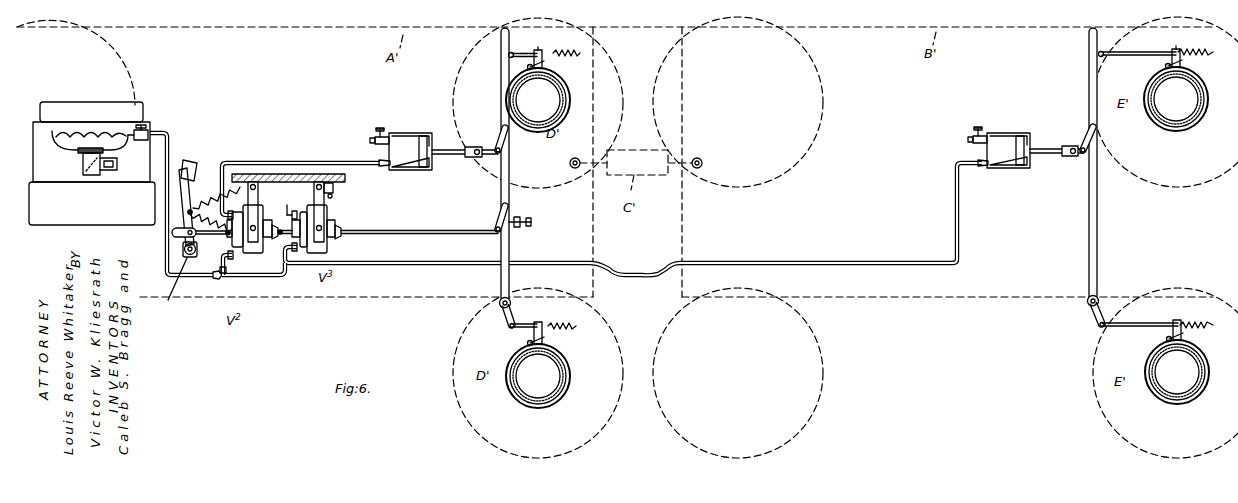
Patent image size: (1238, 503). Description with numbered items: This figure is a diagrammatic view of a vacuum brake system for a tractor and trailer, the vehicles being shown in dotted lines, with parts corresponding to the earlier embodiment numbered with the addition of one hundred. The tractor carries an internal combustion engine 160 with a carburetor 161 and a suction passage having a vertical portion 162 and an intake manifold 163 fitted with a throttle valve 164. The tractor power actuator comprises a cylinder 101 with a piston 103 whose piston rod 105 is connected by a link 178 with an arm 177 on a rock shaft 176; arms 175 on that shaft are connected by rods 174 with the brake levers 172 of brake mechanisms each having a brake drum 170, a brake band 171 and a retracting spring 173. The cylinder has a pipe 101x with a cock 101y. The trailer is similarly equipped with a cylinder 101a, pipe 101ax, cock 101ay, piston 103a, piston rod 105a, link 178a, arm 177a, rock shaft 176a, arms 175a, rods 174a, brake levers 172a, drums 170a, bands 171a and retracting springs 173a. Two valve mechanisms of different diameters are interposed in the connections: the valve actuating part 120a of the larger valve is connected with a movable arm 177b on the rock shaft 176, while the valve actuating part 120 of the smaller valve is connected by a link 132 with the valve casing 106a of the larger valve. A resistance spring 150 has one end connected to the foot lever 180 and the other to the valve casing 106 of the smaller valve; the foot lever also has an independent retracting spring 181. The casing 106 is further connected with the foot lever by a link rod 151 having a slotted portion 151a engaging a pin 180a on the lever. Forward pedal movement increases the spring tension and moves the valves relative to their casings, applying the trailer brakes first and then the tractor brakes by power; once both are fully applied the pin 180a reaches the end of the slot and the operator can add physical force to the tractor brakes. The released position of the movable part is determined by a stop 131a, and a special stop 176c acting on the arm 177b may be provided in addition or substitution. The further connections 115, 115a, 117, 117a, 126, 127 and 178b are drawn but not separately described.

The cylinder 101 is at (389, 135).
The pipe 101x is at (380, 128).
The cock 101y is at (372, 138).
The trailer cylinder 101a is at (995, 134).
The trailer pipe 101ax is at (979, 127).
The trailer cock 101ay is at (970, 137).
The piston 103 is at (421, 165).
The trailer piston 103a is at (1018, 165).
The piston rod 105 is at (444, 157).
The trailer piston rod 105a is at (1050, 156).
The valve casing 106 is at (250, 207).
The valve casing 106a is at (316, 207).
The front brake pipe 115 is at (344, 160).
The rear brake pipe 115a is at (866, 262).
The pipe fitting 117 is at (224, 278).
The connecting pipe 117a is at (285, 266).
The valve actuating part 120 is at (266, 258).
The valve actuating part 120a is at (384, 230).
The supply pipe 126 is at (215, 280).
The reservoir outlet fitting 127 is at (144, 129).
The stop 131a is at (334, 190).
The link 132 is at (284, 228).
The resistance spring 150 is at (187, 244).
The link rod 151 is at (192, 260).
The slotted portion 151a is at (180, 232).
The internal combustion engine 160 is at (89, 110).
The carburetor 161 is at (112, 160).
The vertical portion 162 is at (78, 151).
The intake manifold 163 is at (62, 130).
The throttle valve 164 is at (88, 168).
The brake drum 170 is at (560, 99).
The trailer brake drum 170a is at (1169, 123).
The brake band 171 is at (557, 88).
The trailer brake band 171a is at (1151, 118).
The brake lever 172 is at (527, 67).
The trailer brake lever 172a is at (1170, 60).
The retracting spring 173 is at (566, 50).
The trailer retracting spring 173a is at (1200, 49).
The rod 174 is at (513, 54).
The trailer rod 174a is at (1141, 56).
The arm 175 is at (500, 31).
The trailer arm 175a is at (1098, 36).
The rock shaft 176 is at (500, 57).
The trailer rock shaft 176a is at (1090, 69).
The stop 176c is at (514, 232).
The arm 177 is at (500, 140).
The trailer arm 177a is at (1090, 135).
The movable arm 177b is at (496, 228).
The link 178 is at (484, 158).
The link 178a is at (1080, 148).
The lower rod 178b is at (390, 236).
The foot lever 180 is at (184, 160).
The pin 180a is at (178, 262).
The retracting spring 181 is at (211, 198).